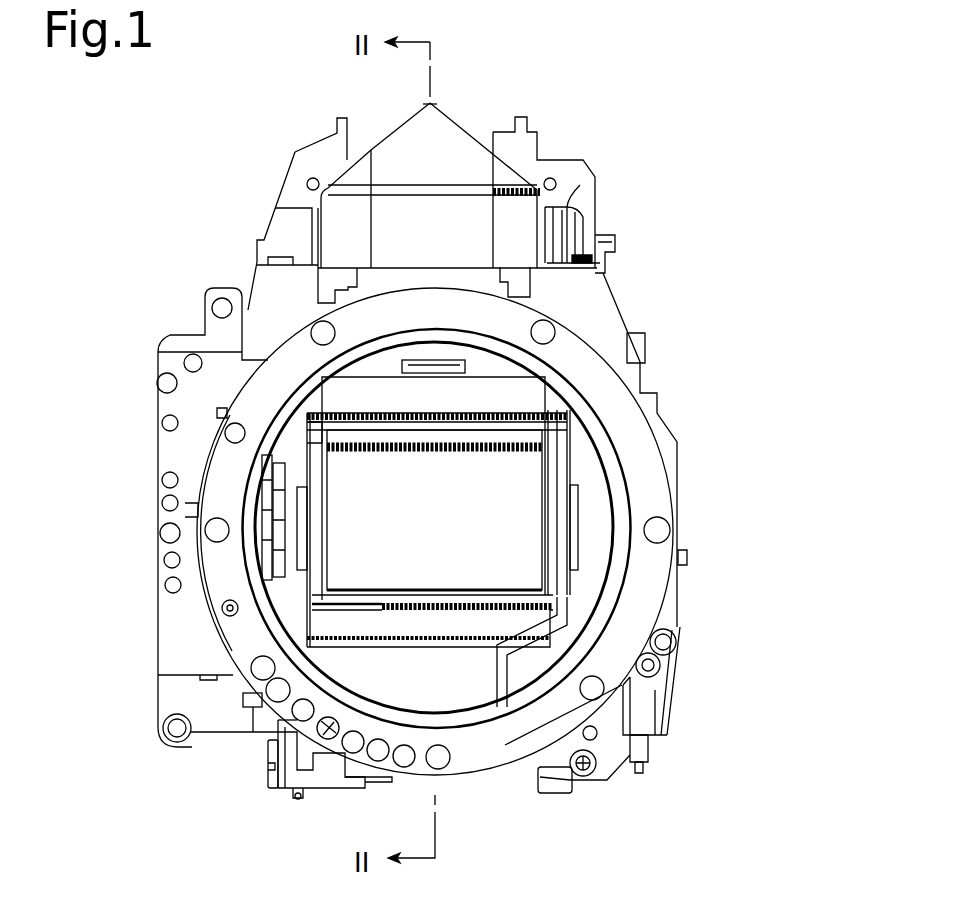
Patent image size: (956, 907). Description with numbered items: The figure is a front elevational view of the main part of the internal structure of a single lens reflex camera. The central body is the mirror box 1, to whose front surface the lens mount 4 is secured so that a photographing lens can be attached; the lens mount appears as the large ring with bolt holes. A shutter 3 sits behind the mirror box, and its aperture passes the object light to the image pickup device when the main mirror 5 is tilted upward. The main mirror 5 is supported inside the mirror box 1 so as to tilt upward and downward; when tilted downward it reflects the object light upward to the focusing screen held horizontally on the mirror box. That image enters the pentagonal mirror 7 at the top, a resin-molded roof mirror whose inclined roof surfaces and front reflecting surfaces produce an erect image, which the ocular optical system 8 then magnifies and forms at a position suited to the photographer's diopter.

The mirror box 1 is at (608, 720).
The shutter 3 is at (217, 712).
The lens mount 4 is at (517, 740).
The main mirror 5 is at (518, 498).
The pentagonal mirror 7 is at (448, 140).
The ocular optical system 8 is at (580, 185).